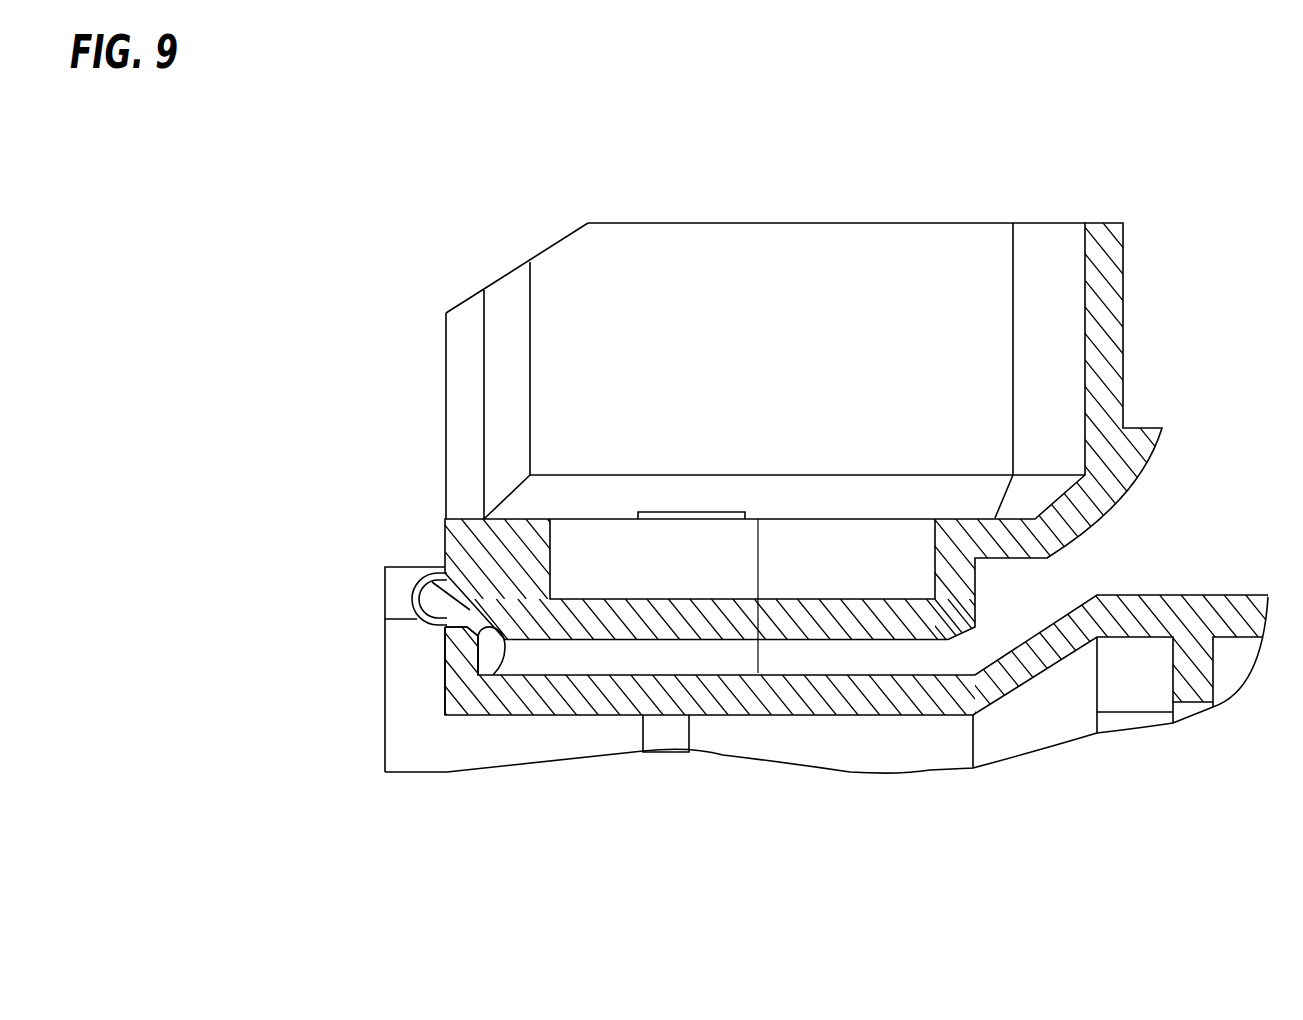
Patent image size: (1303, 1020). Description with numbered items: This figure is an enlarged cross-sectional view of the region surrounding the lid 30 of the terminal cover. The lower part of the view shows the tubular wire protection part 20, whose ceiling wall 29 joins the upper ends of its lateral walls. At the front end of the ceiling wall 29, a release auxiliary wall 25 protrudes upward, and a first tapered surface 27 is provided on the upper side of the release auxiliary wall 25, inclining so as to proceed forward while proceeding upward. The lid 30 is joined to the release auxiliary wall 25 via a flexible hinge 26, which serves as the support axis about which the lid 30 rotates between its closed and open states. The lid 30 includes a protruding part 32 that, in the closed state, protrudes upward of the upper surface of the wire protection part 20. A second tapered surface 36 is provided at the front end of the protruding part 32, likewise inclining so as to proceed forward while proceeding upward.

The wire protection part 20 is at (818, 697).
The release auxiliary wall 25 is at (457, 647).
The hinge 26 is at (417, 620).
The first tapered surface 27 is at (493, 675).
The ceiling wall 29 is at (623, 697).
The lid 30 is at (645, 313).
The protruding part 32 is at (695, 617).
The second tapered surface 36 is at (457, 600).